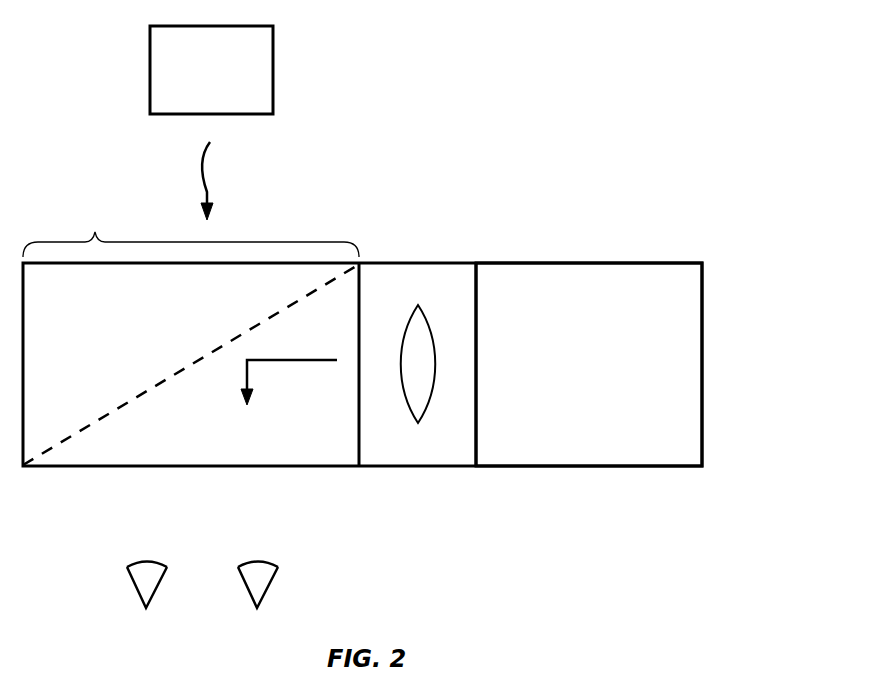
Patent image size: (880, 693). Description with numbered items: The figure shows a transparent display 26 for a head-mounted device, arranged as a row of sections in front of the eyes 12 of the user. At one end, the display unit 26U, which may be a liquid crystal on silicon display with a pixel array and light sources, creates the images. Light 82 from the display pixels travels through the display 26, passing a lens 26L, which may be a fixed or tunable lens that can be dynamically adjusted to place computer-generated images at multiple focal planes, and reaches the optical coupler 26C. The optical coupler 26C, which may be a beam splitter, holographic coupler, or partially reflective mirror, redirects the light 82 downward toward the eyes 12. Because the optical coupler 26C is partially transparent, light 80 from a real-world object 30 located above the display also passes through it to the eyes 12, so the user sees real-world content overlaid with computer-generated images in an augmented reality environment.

The eyes 12 is at (253, 582).
The display 26 is at (758, 353).
The optical coupler 26C is at (191, 337).
The lens 26L is at (433, 318).
The display unit 26U is at (590, 275).
The real-world object 30 is at (273, 68).
The light 80 is at (212, 178).
The light 82 is at (250, 378).